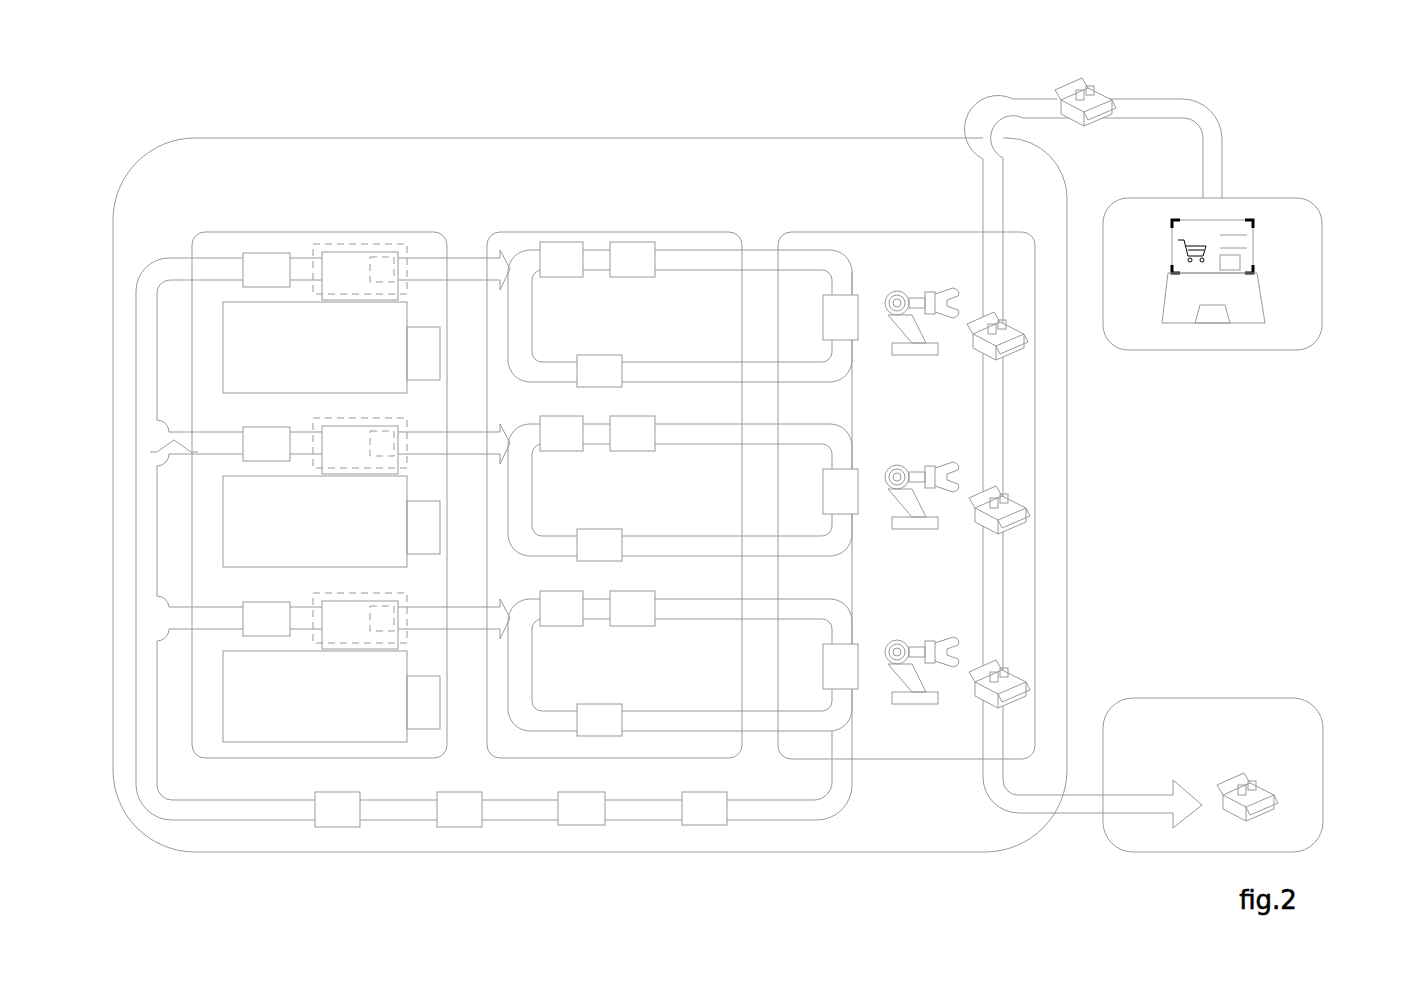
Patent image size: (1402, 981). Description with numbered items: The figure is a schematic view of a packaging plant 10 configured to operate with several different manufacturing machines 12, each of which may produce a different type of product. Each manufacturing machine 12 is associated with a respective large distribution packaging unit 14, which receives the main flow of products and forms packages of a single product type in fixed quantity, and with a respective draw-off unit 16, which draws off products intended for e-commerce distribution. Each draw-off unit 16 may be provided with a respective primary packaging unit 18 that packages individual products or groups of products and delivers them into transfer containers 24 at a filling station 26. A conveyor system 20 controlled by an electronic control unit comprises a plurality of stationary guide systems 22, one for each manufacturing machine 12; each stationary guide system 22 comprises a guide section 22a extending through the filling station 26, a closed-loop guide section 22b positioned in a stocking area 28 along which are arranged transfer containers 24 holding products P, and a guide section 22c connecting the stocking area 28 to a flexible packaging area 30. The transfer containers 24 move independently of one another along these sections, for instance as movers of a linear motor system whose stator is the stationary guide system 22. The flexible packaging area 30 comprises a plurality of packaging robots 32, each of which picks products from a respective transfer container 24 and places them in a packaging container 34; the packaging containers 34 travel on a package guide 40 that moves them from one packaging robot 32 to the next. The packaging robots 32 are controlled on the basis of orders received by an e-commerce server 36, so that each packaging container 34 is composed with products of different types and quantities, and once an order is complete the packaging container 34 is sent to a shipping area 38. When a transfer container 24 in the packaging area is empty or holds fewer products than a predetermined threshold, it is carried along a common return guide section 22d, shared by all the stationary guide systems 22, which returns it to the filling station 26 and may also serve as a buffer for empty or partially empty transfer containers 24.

The packaging plant 10 is at (872, 70).
The manufacturing machine 12 is at (221, 298).
The large distribution packaging unit 14 is at (419, 328).
The draw-off unit 16 is at (344, 252).
The primary packaging unit 18 is at (389, 245).
The conveyor system 20 is at (508, 173).
The stationary guide system 22 is at (517, 238).
The guide section 22a is at (466, 258).
The closed-loop guide section 22b is at (683, 326).
The guide section 22c is at (822, 250).
The return guide section 22d is at (803, 815).
The transfer container 24 is at (247, 253).
The filling station 26 is at (330, 244).
The stocking area 28 is at (717, 225).
The flexible packaging area 30 is at (904, 226).
The packaging robot 32 is at (918, 288).
The packaging container 34 is at (1095, 82).
The e-commerce server 36 is at (1268, 198).
The shipping area 38 is at (1122, 851).
The package guide 40 is at (993, 190).
The products P is at (1003, 321).